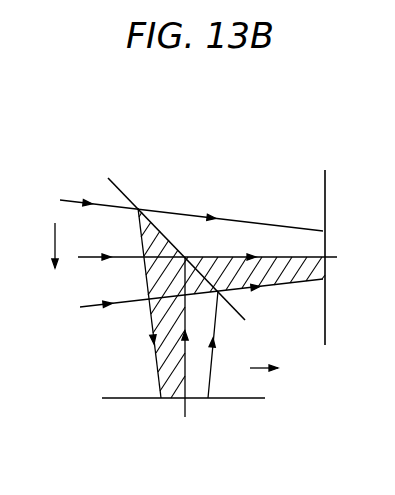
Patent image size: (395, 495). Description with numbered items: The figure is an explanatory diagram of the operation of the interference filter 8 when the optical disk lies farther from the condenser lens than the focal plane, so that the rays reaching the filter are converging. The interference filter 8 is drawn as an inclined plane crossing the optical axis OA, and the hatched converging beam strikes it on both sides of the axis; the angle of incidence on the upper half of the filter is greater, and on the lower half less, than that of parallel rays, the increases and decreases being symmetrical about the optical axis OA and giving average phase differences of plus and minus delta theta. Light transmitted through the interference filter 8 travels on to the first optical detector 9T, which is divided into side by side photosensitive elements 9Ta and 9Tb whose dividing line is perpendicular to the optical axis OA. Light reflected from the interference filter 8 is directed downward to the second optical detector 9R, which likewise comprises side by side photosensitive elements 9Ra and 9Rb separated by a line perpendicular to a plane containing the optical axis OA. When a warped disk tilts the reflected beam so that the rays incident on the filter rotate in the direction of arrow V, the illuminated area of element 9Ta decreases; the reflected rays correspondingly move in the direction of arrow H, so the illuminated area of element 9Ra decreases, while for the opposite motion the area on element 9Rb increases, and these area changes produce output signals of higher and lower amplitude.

The interference filter 8 is at (127, 192).
The optical axis OA is at (127, 257).
The first optical detector 9T is at (326, 154).
The first photosensitive element 9Ta is at (325, 240).
The second photosensitive element 9Tb is at (327, 264).
The second optical detector 9R is at (101, 402).
The photosensitive element 9Ra is at (171, 399).
The photosensitive element 9Rb is at (199, 400).
The arrow V is at (52, 233).
The arrow H is at (273, 371).